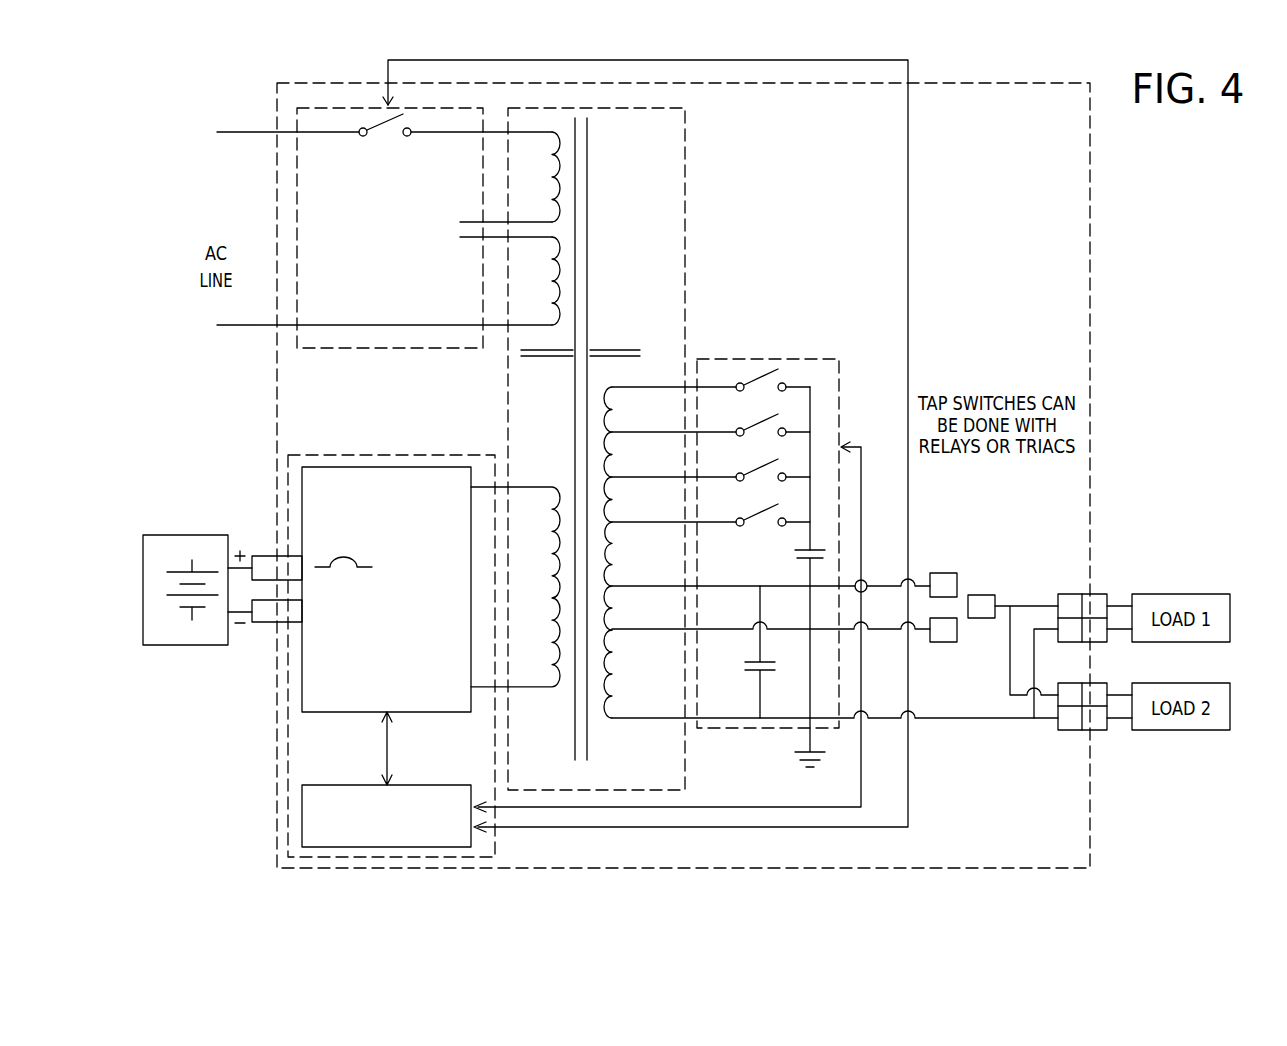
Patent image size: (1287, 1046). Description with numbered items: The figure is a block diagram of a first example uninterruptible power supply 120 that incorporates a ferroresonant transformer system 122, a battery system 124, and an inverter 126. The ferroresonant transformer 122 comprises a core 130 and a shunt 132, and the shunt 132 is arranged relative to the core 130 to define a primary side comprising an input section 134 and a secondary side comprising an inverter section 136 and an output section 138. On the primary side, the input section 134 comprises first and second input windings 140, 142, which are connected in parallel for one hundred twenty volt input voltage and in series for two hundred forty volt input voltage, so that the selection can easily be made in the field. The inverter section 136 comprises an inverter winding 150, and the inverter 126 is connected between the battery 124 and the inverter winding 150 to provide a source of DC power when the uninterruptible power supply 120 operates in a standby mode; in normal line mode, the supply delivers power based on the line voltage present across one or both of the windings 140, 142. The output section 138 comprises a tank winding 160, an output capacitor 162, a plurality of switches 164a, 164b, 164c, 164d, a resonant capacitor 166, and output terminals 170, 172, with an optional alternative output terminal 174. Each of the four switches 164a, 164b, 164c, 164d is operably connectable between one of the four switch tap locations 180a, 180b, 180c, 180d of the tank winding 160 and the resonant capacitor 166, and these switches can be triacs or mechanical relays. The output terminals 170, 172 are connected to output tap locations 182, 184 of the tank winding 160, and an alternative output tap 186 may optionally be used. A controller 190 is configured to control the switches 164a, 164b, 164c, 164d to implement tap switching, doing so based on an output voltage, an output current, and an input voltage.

The uninterruptible power supply 120 is at (1070, 267).
The ferroresonant transformer system 122 is at (932, 265).
The battery system 124 is at (183, 536).
The inverter 126 is at (348, 482).
The core 130 is at (588, 199).
The shunt 132 is at (618, 349).
The input section 134 is at (492, 354).
The inverter section 136 is at (497, 446).
The output section 138 is at (714, 747).
The first input winding 140 is at (552, 176).
The second input winding 142 is at (552, 284).
The inverter winding 150 is at (556, 618).
The tank winding 160 is at (611, 560).
The output capacitor 162 is at (756, 672).
The switch 164a is at (759, 371).
The switch 164b is at (761, 420).
The switch 164c is at (761, 465).
The switch 164d is at (761, 509).
The resonant capacitor 166 is at (797, 546).
The output terminal 170 is at (945, 578).
The output terminal 172 is at (982, 600).
The alternative output terminal 174 is at (945, 645).
The switch tap location 180a is at (613, 387).
The switch tap location 180b is at (613, 432).
The switch tap location 180c is at (613, 477).
The switch tap location 180d is at (613, 522).
The output tap location 182 is at (614, 592).
The output tap location 184 is at (613, 720).
The alternative output tap 186 is at (613, 636).
The controller 190 is at (352, 794).